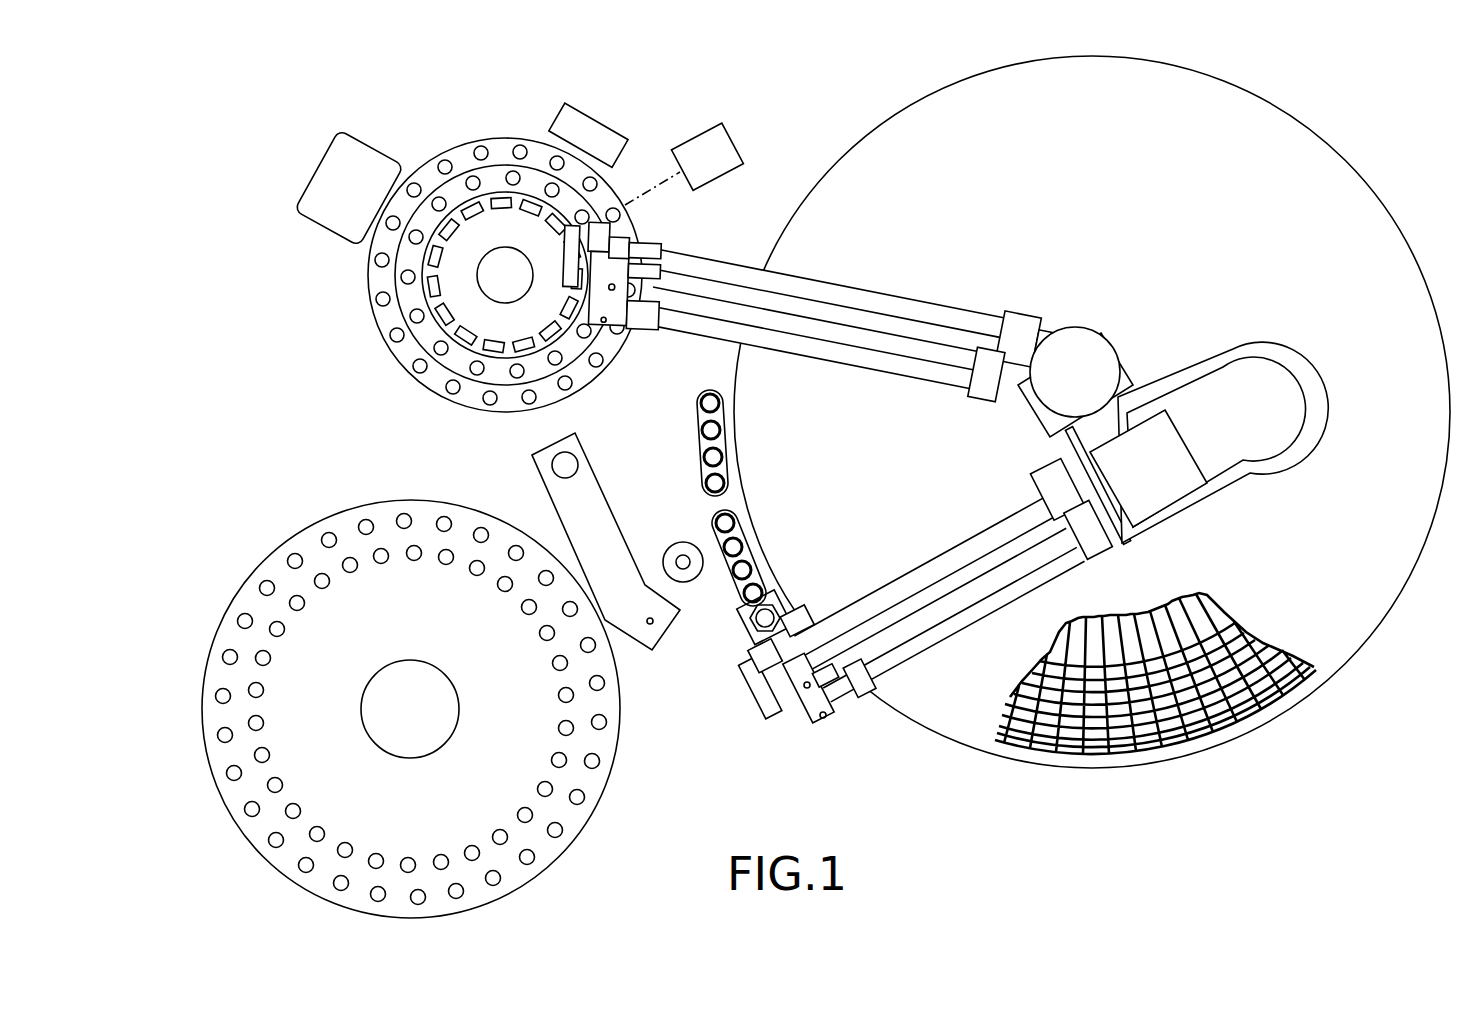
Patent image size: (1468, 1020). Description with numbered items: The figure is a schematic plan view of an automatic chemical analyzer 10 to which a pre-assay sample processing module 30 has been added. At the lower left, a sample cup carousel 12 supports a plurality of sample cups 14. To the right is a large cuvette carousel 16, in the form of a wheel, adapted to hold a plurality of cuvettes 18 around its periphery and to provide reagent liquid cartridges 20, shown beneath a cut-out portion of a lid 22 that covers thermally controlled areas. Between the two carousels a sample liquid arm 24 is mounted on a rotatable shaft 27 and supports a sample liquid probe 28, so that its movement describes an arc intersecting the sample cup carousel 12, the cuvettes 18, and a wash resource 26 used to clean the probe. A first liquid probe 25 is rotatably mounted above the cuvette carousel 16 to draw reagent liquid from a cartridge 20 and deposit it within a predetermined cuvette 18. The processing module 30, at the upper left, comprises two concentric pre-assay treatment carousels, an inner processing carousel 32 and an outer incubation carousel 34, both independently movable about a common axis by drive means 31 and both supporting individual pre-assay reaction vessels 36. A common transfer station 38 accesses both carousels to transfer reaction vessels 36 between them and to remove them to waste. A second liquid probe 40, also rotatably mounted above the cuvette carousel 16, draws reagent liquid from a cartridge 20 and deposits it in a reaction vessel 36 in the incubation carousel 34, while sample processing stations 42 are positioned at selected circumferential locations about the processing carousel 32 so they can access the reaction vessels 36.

The automatic chemical analyzer 10 is at (250, 402).
The sample cup carousel 12 is at (445, 805).
The sample cups 14 is at (602, 721).
The cuvette carousel 16 is at (1285, 772).
The cuvettes 18 is at (700, 405).
The reagent liquid cartridges 20 is at (1296, 652).
The lid 22 is at (1300, 534).
The sample liquid arm 24 is at (590, 512).
The first liquid probe 25 is at (952, 568).
The wash resource 26 is at (590, 135).
The rotatable shaft 27 is at (580, 462).
The sample liquid probe 28 is at (655, 625).
The pre-assay sample processing module 30 is at (373, 110).
The drive means 31 is at (740, 150).
The processing carousel 32 is at (423, 336).
The incubation carousel 34 is at (490, 146).
The pre-assay reaction vessels 36 is at (519, 150).
The common transfer station 38 is at (330, 167).
The second liquid probe 40 is at (875, 303).
The sample processing stations 42 is at (468, 204).